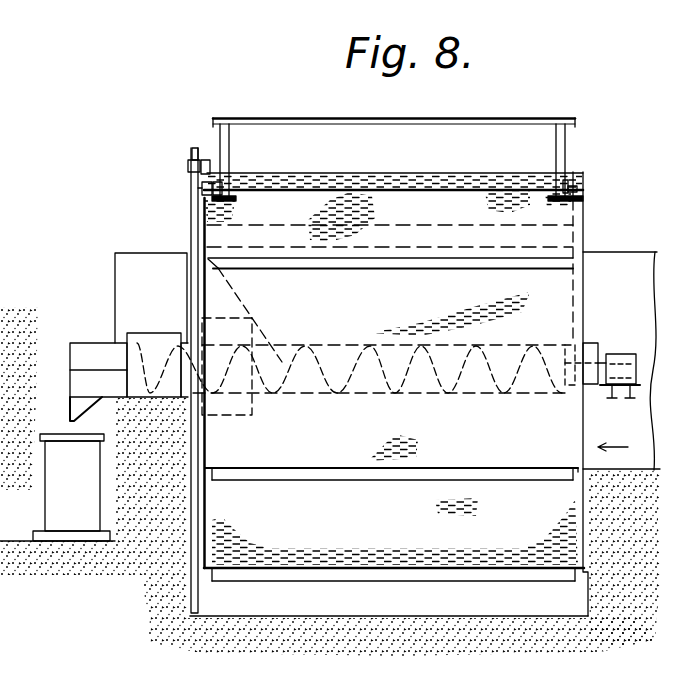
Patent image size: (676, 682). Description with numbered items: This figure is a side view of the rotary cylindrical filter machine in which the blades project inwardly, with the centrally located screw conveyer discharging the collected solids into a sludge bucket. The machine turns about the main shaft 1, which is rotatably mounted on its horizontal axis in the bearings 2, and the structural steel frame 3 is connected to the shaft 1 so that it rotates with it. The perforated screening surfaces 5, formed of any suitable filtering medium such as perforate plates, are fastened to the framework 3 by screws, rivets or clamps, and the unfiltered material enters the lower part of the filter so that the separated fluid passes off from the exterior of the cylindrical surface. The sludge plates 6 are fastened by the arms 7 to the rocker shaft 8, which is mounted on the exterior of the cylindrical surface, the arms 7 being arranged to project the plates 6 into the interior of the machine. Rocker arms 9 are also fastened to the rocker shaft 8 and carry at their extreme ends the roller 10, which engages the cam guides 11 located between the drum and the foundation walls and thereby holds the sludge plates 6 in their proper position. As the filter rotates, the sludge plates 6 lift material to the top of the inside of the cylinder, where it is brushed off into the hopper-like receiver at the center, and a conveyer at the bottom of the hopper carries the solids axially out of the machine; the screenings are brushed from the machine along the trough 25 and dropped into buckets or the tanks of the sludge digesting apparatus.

The main shaft 1 is at (601, 348).
The bearings 2 is at (148, 342).
The structural steel frame 3 is at (616, 360).
The perforated screening surfaces 5 is at (545, 497).
The sludge plates 6 is at (397, 125).
The arms 7 is at (233, 148).
The rocker shaft 8 is at (204, 191).
The rocker arms 9 is at (191, 177).
The roller 10 is at (205, 160).
The guides 11 is at (190, 238).
The trough 25 is at (70, 411).